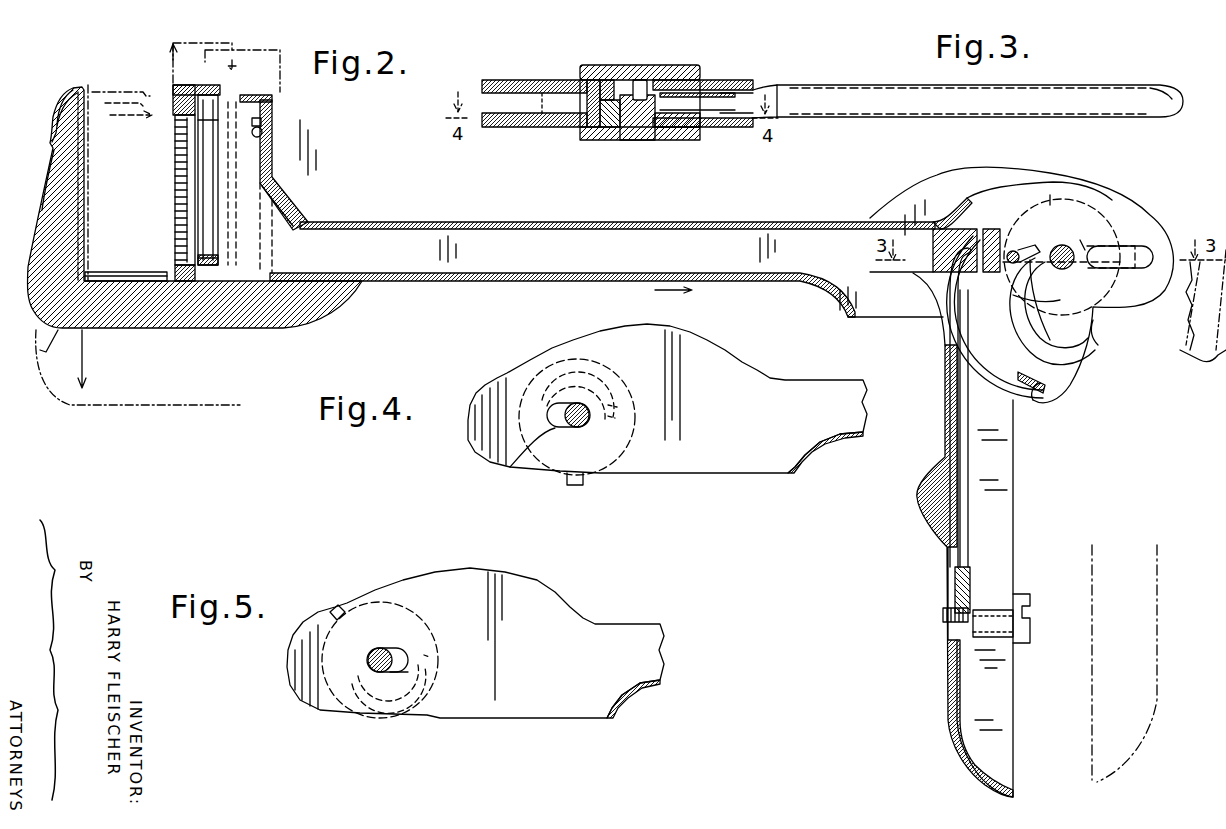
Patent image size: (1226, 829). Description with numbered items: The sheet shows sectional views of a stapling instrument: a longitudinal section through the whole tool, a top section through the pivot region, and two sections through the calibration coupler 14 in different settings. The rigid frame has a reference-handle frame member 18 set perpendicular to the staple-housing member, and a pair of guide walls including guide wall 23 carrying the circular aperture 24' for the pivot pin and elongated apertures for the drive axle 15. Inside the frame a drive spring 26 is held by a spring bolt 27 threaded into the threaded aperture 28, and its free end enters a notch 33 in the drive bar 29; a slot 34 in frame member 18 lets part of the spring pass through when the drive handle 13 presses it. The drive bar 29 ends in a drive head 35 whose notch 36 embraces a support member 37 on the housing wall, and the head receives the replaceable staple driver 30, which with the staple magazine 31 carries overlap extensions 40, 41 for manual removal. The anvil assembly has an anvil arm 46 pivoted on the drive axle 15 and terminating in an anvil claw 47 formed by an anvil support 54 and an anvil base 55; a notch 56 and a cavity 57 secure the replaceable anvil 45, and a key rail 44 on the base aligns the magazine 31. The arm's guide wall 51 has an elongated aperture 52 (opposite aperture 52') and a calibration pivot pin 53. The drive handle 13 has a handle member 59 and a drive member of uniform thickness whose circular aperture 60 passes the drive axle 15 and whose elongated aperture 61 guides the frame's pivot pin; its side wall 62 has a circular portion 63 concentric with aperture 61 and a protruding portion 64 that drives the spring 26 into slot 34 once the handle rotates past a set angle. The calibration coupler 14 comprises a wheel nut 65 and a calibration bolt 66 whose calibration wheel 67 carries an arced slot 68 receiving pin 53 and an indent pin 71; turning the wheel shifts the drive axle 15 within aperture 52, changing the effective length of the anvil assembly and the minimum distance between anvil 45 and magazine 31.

In FIG. 2, the drive handle 13 is at (1202, 344).
In FIG. 3, the drive handle 13 is at (855, 82).
In FIG. 4, the calibration coupler 14 is at (628, 370).
In FIG. 5, the calibration coupler 14 is at (420, 607).
In FIG. 4, the drive axle 15 is at (580, 428).
In FIG. 5, the drive axle 15 is at (378, 648).
In FIG. 2, the frame member 18 is at (1005, 548).
In FIG. 2, the guide wall 23 is at (534, 124).
In FIG. 2, the aperture 24' is at (1036, 294).
In FIG. 2, the drive spring 26 is at (968, 500).
In FIG. 2, the spring bolt 27 is at (1028, 614).
In FIG. 2, the threaded aperture 28 is at (945, 622).
In FIG. 2, the drive bar 29 is at (412, 221).
In FIG. 2, the staple driver 30 is at (216, 250).
In FIG. 2, the staple magazine 31 is at (176, 214).
In FIG. 2, the notch 33 is at (986, 229).
In FIG. 2, the slot 34 is at (948, 337).
In FIG. 2, the drive head 35 is at (255, 212).
In FIG. 2, the notch 36 is at (264, 138).
In FIG. 2, the support member 37 is at (272, 122).
In FIG. 2, the overlap extension 40 is at (145, 92).
In FIG. 2, the overlap extension 41 is at (96, 84).
In FIG. 2, the key rail 44 is at (122, 272).
In FIG. 2, the anvil 45 is at (72, 89).
In FIG. 2, the anvil arm 46 is at (506, 284).
In FIG. 2, the anvil claw 47 is at (138, 330).
In FIG. 2, the guide wall 51 is at (703, 125).
In FIG. 4, the guide wall 51 is at (667, 404).
In FIG. 5, the guide wall 51 is at (475, 634).
In FIG. 4, the elongated aperture 52 is at (532, 462).
In FIG. 5, the elongated aperture 52 is at (405, 642).
In FIG. 2, the elongated aperture 52' is at (1072, 275).
In FIG. 2, the calibration pivot pin 53 is at (612, 126).
In FIG. 4, the calibration pivot pin 53 is at (610, 416).
In FIG. 5, the calibration pivot pin 53 is at (432, 660).
In FIG. 2, the anvil support 54 is at (48, 228).
In FIG. 2, the anvil base 55 is at (207, 322).
In FIG. 2, the notch 56 is at (47, 156).
In FIG. 2, the cavity 57 is at (138, 367).
In FIG. 2, the handle member 59 is at (1157, 655).
In FIG. 3, the handle member 59 is at (1090, 86).
In FIG. 2, the circular aperture 60 is at (1070, 282).
In FIG. 2, the elongated aperture 61 is at (1043, 372).
In FIG. 2, the side wall 62 is at (1078, 240).
In FIG. 2, the circular portion 63 is at (966, 356).
In FIG. 2, the protruding portion 64 is at (1028, 410).
In FIG. 2, the wheel nut 65 is at (678, 66).
In FIG. 2, the calibration bolt 66 is at (668, 142).
In FIG. 2, the calibration wheel 67 is at (635, 120).
In FIG. 4, the arced slot 68 is at (606, 385).
In FIG. 5, the arced slot 68 is at (365, 694).
In FIG. 2, the indent pin 71 is at (592, 120).